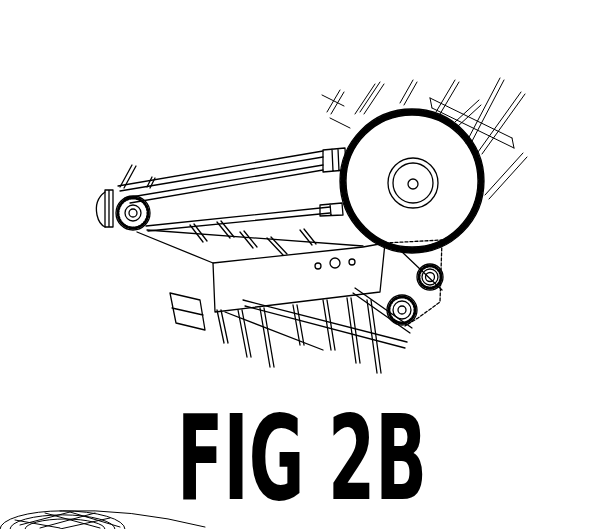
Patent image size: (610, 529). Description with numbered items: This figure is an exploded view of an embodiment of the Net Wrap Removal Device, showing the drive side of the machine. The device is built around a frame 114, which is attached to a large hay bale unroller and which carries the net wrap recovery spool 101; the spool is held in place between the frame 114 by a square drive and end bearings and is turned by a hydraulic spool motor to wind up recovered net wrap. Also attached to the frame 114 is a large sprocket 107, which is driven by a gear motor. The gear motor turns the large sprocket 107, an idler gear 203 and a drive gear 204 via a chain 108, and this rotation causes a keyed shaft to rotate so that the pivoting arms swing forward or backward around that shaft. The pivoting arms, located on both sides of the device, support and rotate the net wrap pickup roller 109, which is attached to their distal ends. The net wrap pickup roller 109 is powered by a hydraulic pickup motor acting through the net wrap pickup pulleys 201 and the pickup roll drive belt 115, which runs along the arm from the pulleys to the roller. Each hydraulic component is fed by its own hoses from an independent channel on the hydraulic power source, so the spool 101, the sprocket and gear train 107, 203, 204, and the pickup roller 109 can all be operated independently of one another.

The net wrap recovery spool 101 is at (263, 232).
The large sprocket 107 is at (447, 153).
The chain 108 is at (445, 242).
The net wrap pickup roller 109 is at (105, 182).
The frame 114 is at (230, 278).
The pickup roll drive belt 115 is at (257, 183).
The net wrap pickup pulleys 201 is at (123, 228).
The idler gear 203 is at (433, 280).
The drive gear 204 is at (413, 317).